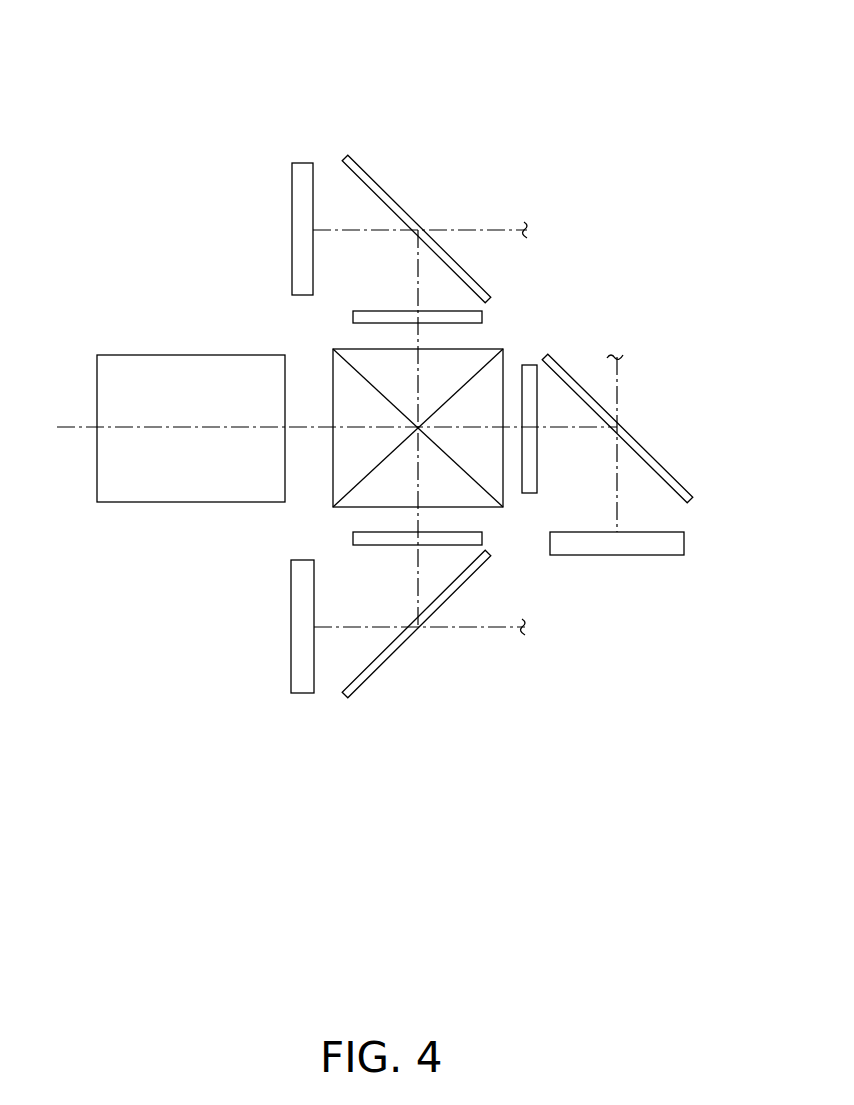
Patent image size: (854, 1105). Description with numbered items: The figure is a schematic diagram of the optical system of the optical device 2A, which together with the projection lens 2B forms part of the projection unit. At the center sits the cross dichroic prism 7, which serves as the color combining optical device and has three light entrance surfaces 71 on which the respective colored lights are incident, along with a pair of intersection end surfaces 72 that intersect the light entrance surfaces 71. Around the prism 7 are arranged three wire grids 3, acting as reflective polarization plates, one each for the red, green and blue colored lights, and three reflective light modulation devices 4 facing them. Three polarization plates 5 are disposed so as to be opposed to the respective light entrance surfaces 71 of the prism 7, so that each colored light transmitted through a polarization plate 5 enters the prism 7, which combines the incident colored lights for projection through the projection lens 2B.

The optical device 2A is at (650, 79).
The projection lens 2B is at (158, 503).
The wire grid 3 is at (365, 165).
The reflective light modulation device 4 is at (302, 162).
The polarization plate 5 is at (378, 310).
The cross dichroic prism 7 is at (437, 420).
The light entrance surface 71 is at (345, 350).
The intersection end surface 72 is at (468, 357).